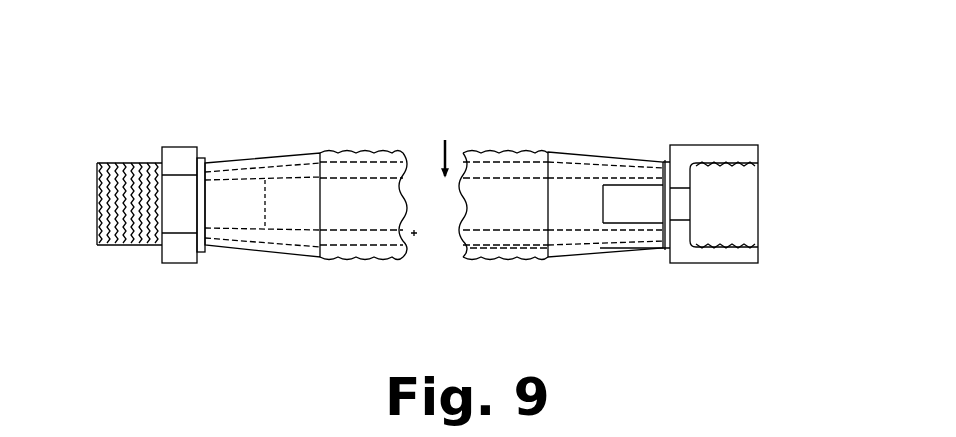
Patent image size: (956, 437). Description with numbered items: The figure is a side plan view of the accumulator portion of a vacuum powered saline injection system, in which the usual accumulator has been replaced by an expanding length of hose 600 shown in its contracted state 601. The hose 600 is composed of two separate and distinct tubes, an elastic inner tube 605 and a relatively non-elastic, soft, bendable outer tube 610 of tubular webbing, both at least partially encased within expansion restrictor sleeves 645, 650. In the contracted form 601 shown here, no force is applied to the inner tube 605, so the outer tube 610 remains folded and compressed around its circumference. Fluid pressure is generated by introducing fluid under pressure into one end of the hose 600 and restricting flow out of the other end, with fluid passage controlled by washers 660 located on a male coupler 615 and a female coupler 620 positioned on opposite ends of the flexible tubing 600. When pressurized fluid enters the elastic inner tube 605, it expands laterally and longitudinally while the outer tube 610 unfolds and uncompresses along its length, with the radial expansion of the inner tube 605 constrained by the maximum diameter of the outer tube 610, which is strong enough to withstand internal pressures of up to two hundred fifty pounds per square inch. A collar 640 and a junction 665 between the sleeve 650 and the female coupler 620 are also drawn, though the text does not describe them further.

The expanding length of hose/tubing 600 is at (670, 60).
The contracted state 601 is at (441, 168).
The inner tube 605 is at (502, 152).
The outer tube 610 is at (518, 258).
The male coupler 615 is at (180, 146).
The female coupler 620 is at (718, 264).
The collar 640 is at (200, 157).
The expansion restrictor sleeve 645 is at (285, 258).
The expansion restrictor sleeve 650 is at (575, 152).
The washers 660 is at (660, 252).
The fitting junction 665 is at (663, 160).